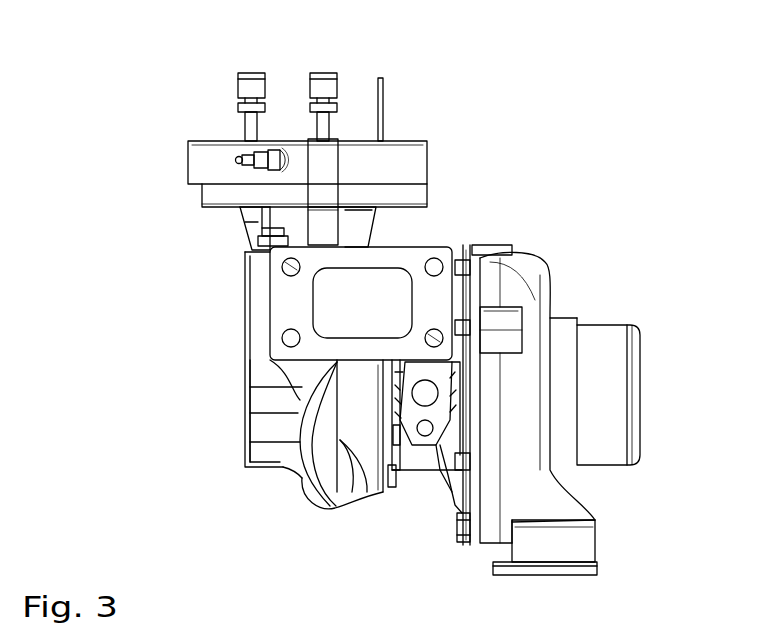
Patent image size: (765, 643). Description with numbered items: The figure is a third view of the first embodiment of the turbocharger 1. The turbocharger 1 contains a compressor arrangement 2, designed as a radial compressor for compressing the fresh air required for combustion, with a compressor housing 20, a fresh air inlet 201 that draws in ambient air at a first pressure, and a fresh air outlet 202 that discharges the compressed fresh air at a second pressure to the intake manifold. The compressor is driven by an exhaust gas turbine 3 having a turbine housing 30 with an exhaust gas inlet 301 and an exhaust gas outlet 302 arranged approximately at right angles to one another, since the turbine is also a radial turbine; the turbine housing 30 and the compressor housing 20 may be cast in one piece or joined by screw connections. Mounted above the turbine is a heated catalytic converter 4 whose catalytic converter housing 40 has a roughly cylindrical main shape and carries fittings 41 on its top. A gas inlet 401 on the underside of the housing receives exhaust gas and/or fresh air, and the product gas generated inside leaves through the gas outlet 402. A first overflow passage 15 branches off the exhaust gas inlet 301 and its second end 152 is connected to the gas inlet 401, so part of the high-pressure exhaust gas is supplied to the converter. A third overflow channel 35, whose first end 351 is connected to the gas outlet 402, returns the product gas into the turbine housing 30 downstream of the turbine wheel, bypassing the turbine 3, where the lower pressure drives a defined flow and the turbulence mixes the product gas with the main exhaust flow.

The turbocharger 1 is at (618, 168).
The compressor arrangement 2 is at (595, 308).
The compressor housing 20 is at (553, 462).
The fresh air inlet 201 is at (597, 568).
The fresh air outlet 202 is at (637, 395).
The exhaust gas turbine 3 is at (216, 463).
The turbine housing 30 is at (345, 495).
The exhaust gas inlet 301 is at (322, 308).
The exhaust gas outlet 302 is at (243, 358).
The third overflow channel 35 is at (248, 238).
The first end 351 is at (248, 218).
The heated catalytic converter 4 is at (403, 122).
The catalytic converter housing 40 is at (240, 160).
The fastening bolt 41 is at (252, 90).
The gas inlet 401 is at (366, 210).
The gas outlet 402 is at (238, 205).
The first overflow passage 15 is at (360, 239).
The second end 152 is at (362, 217).